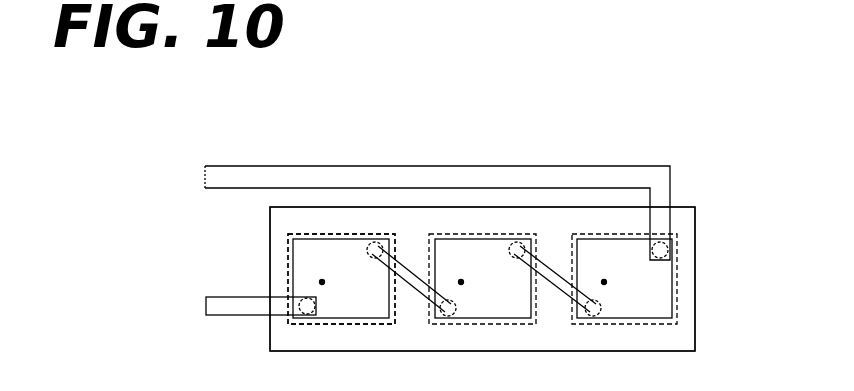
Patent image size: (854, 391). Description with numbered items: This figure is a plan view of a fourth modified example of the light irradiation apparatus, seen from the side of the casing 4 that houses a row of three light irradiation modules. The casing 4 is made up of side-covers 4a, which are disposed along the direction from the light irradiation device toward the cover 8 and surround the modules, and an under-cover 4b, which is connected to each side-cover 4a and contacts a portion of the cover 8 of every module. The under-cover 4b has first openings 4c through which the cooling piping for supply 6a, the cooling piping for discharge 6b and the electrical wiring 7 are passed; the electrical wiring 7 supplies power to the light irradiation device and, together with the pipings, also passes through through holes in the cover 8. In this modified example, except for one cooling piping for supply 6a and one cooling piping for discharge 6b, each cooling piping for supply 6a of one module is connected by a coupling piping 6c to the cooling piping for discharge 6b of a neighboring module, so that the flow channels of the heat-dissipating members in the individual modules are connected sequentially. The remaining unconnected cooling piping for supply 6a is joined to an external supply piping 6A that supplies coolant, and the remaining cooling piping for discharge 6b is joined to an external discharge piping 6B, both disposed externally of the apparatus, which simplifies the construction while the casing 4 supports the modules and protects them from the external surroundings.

The casing 4 is at (686, 333).
The side-cover 4a is at (618, 207).
The under-cover 4b is at (678, 215).
The first opening 4c is at (348, 239).
The external supply piping 6A is at (233, 307).
The external discharge piping 6B is at (231, 177).
The cooling piping for supply 6a is at (305, 313).
The cooling piping for discharge 6b is at (379, 242).
The coupling piping 6c is at (413, 287).
The electrical wiring 7 is at (321, 280).
The cover 8 is at (287, 257).